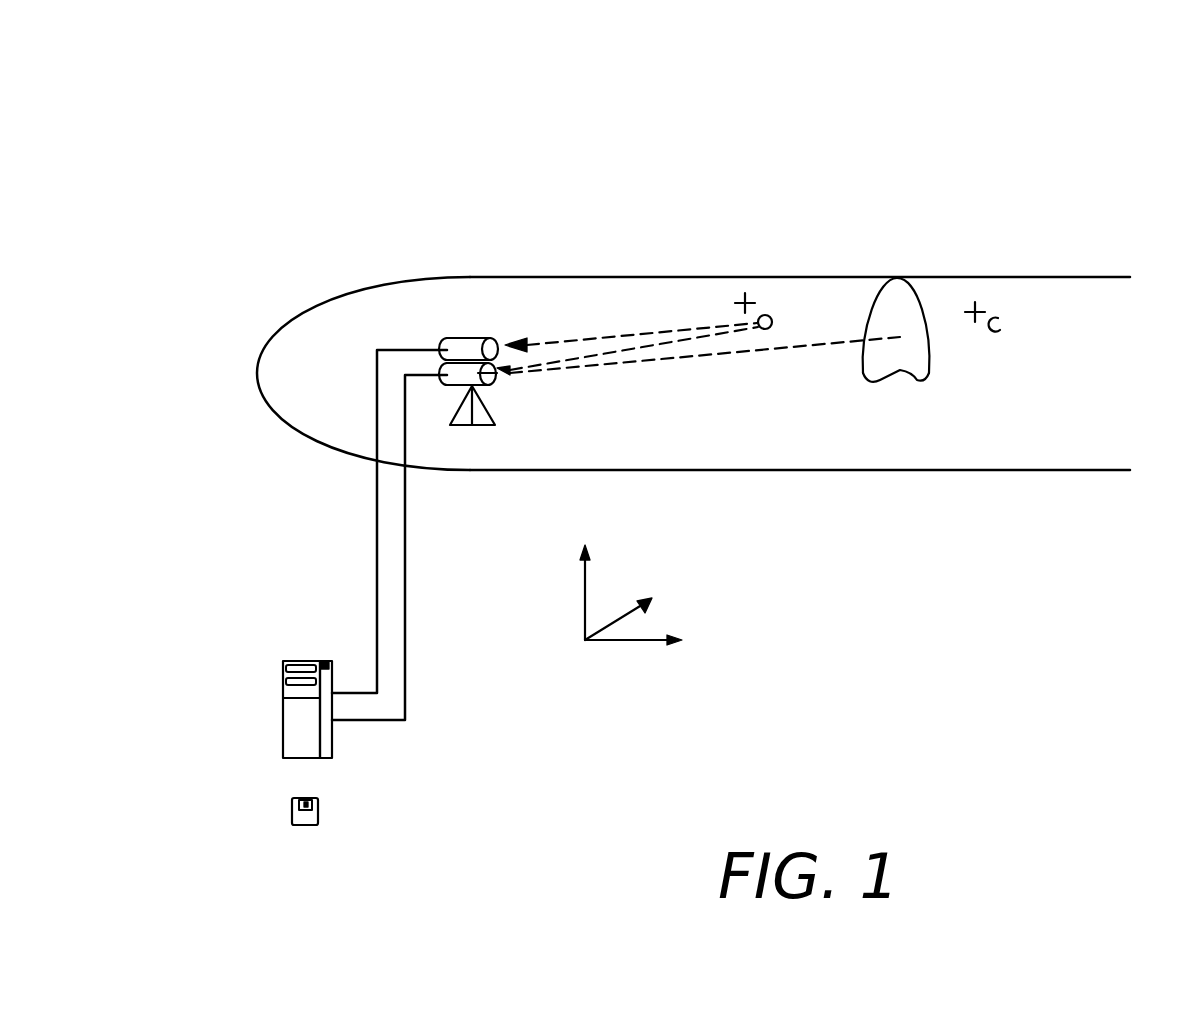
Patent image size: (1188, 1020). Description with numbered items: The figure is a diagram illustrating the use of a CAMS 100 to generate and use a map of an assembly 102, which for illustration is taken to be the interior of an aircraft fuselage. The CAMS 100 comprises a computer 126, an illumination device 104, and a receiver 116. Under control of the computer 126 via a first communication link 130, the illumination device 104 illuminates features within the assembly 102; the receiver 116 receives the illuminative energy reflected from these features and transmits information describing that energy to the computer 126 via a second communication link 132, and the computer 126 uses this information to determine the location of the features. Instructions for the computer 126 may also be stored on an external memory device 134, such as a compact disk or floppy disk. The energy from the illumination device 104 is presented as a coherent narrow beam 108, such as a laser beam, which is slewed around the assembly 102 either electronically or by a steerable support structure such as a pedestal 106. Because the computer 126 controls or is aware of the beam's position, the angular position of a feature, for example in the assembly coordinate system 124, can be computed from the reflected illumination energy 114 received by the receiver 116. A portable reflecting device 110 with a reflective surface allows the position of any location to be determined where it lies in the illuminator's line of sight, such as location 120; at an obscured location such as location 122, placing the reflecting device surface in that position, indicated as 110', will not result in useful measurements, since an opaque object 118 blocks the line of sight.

The CAMS 100 is at (735, 144).
The assembly 102 is at (882, 470).
The illumination device 104 is at (497, 382).
The pedestal 106 is at (497, 412).
The coherent narrow beam 108 is at (650, 343).
The portable reflecting device 110 is at (805, 305).
The reflecting device surface position 110' is at (1045, 308).
The reflected illumination energy 114 is at (603, 333).
The receiver 116 is at (470, 338).
The object / tooth 118 is at (897, 372).
The location 120 is at (745, 300).
The location 122 is at (975, 302).
The assembly coordinate system 124 is at (848, 342).
The computer 126 is at (307, 660).
The first communication link 130 is at (405, 530).
The second communication link 132 is at (377, 573).
The external memory device 134 is at (318, 812).